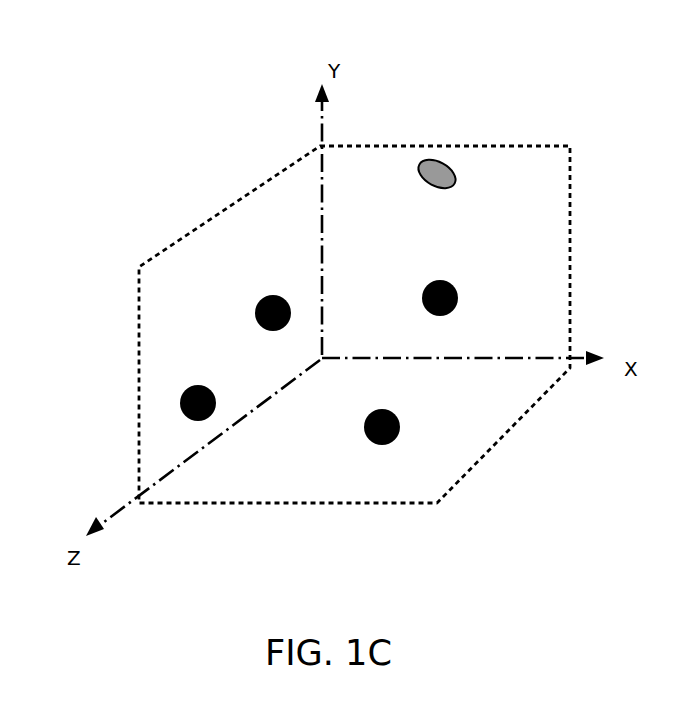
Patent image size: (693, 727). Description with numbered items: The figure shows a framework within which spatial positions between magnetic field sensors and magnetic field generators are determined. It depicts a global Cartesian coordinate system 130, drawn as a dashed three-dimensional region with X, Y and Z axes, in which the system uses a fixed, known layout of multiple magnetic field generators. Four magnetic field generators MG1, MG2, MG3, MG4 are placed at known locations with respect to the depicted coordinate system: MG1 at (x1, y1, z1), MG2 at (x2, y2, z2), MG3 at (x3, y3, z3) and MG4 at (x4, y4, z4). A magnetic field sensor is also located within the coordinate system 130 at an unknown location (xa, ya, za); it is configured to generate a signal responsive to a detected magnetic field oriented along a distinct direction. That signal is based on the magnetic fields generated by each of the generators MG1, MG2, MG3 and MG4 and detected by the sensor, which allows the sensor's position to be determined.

The Cartesian coordinate system 130 is at (233, 199).
The magnetic field generator MG1 is at (430, 433).
The magnetic field generator MG2 is at (467, 272).
The magnetic field generator MG3 is at (261, 286).
The magnetic field generator MG4 is at (196, 377).